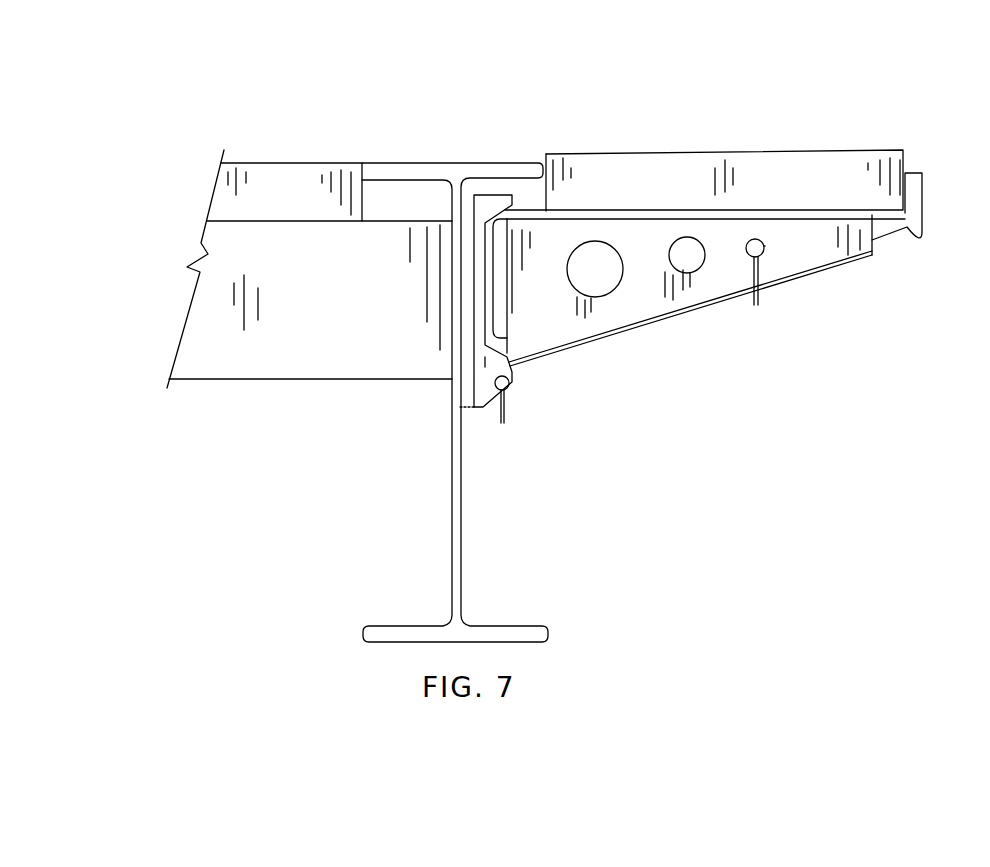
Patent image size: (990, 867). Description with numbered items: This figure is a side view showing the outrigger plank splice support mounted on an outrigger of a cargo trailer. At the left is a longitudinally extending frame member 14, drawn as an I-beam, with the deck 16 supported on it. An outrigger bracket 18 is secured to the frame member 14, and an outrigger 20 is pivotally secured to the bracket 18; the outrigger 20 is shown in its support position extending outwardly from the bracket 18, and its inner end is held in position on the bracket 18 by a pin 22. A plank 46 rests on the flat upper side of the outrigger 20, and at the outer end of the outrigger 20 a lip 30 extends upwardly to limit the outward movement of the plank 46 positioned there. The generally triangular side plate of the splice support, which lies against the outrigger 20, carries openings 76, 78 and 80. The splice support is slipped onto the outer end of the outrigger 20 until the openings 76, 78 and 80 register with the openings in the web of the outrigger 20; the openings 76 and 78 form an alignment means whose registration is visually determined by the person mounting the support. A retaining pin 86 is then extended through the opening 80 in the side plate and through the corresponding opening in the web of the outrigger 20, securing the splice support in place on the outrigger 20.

The frame member 14 is at (448, 453).
The deck 16 is at (331, 161).
The outrigger bracket 18 is at (488, 353).
The outrigger 20 is at (901, 228).
The pin 22 is at (510, 388).
The lip 30 is at (918, 195).
The plank 46 is at (673, 172).
The opening 76 is at (617, 282).
The opening 78 is at (676, 259).
The opening 80 is at (764, 246).
The retaining pin 86 is at (750, 256).